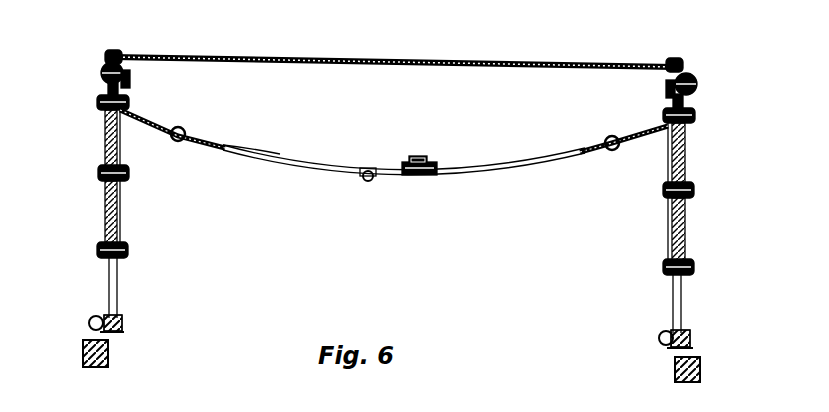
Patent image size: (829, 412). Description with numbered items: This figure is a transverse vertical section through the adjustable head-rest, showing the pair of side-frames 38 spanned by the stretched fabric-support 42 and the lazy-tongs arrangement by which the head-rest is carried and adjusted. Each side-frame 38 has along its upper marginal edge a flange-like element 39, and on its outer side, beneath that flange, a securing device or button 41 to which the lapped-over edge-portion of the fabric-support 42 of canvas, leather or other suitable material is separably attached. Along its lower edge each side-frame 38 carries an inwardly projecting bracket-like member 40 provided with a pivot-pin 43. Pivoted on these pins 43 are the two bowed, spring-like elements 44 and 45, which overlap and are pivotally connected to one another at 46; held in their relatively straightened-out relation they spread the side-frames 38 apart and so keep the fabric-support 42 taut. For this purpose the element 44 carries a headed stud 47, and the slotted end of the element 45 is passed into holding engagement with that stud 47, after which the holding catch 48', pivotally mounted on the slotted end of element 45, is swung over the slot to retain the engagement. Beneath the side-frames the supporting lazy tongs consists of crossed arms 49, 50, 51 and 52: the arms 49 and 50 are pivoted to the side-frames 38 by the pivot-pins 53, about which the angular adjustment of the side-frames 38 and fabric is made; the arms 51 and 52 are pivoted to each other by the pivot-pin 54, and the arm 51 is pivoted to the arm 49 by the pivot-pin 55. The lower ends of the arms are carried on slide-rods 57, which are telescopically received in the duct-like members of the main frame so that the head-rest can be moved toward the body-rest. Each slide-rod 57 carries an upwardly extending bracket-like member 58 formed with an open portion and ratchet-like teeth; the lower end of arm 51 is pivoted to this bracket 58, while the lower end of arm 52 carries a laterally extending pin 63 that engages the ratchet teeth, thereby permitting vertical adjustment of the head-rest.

The side-frame 38 is at (128, 84).
The flange-like element 39 is at (117, 52).
The bracket-like member 40 is at (200, 150).
The securing device 41 is at (100, 73).
The fabric-support 42 is at (268, 56).
The pivot-pin 43 is at (180, 143).
The bowed element 44 is at (494, 175).
The bowed element 45 is at (244, 150).
The pivotal connection 46 is at (370, 169).
The headed stud 47 is at (418, 160).
The holding catch 48' is at (451, 145).
The crossed arm 49 is at (104, 136).
The crossed arm 50 is at (121, 154).
The crossed arm 51 is at (104, 212).
The crossed arm 52 is at (121, 212).
The pivot-pin 53 is at (97, 101).
The pivot-pin 54 is at (97, 250).
The pivot-pin 55 is at (98, 173).
The slide-rod 57 is at (82, 358).
The bracket-like member 58 is at (93, 318).
The pin 63 is at (123, 323).